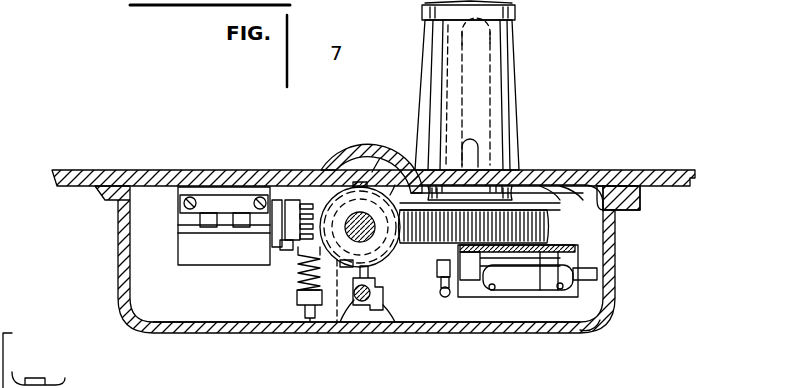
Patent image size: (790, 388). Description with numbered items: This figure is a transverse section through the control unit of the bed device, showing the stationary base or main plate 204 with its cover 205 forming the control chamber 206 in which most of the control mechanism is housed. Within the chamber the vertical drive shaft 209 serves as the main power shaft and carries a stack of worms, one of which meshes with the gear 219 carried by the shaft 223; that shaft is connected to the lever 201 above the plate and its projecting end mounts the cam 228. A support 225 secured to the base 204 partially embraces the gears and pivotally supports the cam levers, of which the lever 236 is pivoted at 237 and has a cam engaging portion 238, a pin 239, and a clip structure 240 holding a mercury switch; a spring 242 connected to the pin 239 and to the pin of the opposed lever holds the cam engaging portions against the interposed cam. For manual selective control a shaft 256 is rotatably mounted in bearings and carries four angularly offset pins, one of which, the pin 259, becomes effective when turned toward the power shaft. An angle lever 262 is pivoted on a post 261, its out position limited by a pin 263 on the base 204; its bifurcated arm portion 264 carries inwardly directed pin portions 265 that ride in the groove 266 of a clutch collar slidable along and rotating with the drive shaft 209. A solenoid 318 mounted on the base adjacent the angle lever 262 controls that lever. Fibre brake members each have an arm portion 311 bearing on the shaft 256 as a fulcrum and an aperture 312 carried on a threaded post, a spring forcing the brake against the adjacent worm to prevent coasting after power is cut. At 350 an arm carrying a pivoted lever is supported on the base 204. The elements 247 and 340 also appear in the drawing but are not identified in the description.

The lever 201 is at (515, 14).
The base or main plate 204 is at (160, 170).
The cover 205 is at (200, 333).
The control chamber 206 is at (170, 298).
The drive shaft 209 is at (357, 220).
The gear 219 is at (560, 232).
The shaft 223 is at (490, 110).
The support 225 is at (540, 196).
The cam 228 is at (440, 292).
The cam lever 236 is at (560, 262).
The pivot 237 is at (587, 332).
The cam engaging portion 238 is at (497, 282).
The pin 239 is at (445, 300).
The clip structure 240 is at (560, 262).
The spring 242 is at (457, 283).
The motor shaft 247 is at (560, 287).
The shaft 256 is at (365, 322).
The pin 259 is at (380, 312).
The post 261 is at (294, 248).
The angle lever 262 is at (276, 248).
The pin 263 is at (300, 200).
The arm portion 264 is at (318, 200).
The pin portions 265 is at (382, 158).
The groove 266 is at (395, 185).
The arm portion 311 is at (383, 283).
The aperture 312 is at (312, 322).
The solenoid 318 is at (180, 243).
The line 340 is at (282, 322).
The support 350 is at (43, 380).